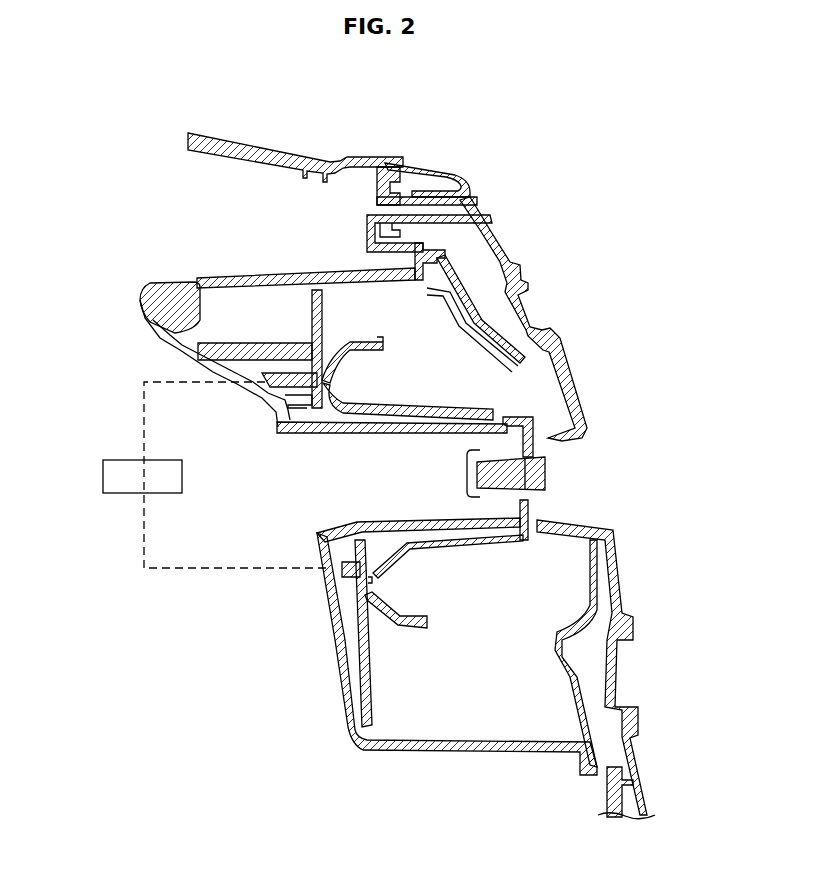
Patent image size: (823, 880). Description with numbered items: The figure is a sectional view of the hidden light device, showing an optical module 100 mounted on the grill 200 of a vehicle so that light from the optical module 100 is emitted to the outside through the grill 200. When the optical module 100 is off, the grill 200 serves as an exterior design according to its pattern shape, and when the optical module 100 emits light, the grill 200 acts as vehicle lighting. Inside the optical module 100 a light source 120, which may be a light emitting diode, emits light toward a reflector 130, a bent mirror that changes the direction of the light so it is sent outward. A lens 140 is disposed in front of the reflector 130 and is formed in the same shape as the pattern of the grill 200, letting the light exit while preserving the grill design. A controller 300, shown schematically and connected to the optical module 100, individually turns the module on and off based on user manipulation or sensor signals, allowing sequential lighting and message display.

The optical module 100 is at (150, 339).
The light source 120 is at (300, 428).
The reflector 130 is at (388, 412).
The lens 140 is at (572, 378).
The grill 200 is at (531, 269).
The controller 300 is at (120, 488).